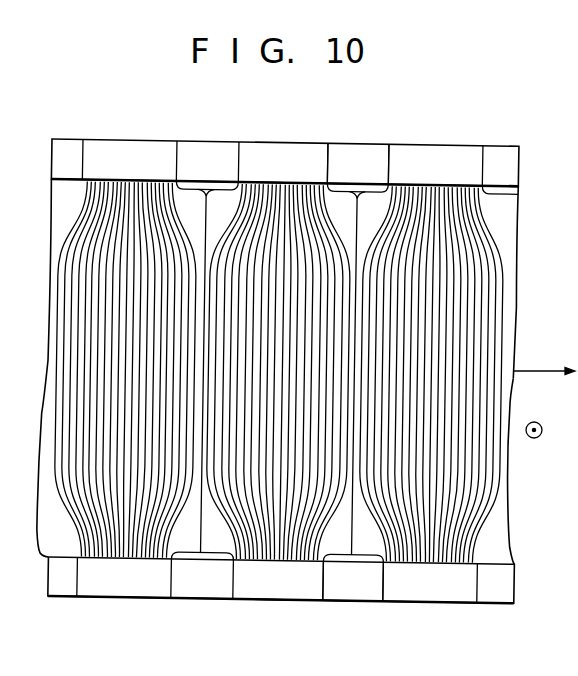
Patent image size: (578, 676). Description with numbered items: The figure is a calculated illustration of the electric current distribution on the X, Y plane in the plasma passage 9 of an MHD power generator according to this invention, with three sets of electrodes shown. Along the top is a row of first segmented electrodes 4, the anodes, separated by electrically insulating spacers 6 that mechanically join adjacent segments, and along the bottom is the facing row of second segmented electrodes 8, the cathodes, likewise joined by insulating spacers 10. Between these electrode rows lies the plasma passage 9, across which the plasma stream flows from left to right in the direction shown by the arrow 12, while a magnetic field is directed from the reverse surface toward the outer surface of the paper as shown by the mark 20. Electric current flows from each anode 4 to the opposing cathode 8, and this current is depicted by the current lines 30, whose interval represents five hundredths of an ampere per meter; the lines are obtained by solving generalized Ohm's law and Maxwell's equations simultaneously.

The first segmented electrode 4 is at (301, 151).
The electrically insulating spacer 6 is at (369, 152).
The second segmented electrode 8 is at (277, 591).
The electrically insulating spacer 10 is at (369, 593).
The current lines 30 is at (515, 233).
The plasma passage 9 is at (505, 536).
The arrow indicating plasma flow direction 12 is at (536, 371).
The mark indicating magnetic field direction 20 is at (534, 439).